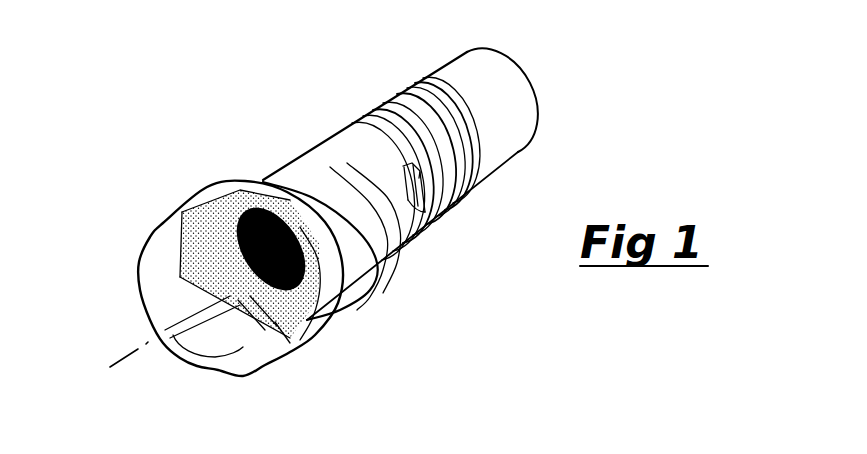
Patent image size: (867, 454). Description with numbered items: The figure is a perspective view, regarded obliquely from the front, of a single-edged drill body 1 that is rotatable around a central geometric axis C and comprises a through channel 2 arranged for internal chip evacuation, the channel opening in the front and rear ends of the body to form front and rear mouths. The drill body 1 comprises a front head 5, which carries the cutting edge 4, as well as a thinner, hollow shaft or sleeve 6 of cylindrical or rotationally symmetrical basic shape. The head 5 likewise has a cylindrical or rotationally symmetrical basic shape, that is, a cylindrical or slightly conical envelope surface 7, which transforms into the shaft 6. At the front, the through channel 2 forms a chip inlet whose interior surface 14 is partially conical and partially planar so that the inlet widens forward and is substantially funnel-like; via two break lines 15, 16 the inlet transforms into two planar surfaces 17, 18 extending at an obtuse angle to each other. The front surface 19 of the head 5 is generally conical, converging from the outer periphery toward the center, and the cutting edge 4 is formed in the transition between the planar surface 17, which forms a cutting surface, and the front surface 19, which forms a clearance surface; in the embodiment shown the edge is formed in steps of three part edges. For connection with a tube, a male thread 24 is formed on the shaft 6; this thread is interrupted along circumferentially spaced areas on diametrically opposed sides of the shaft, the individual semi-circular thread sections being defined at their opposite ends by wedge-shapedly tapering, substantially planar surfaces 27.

The drill body 1 is at (291, 132).
The through channel 2 is at (237, 185).
The cutting edge 4 is at (225, 335).
The front head 5 is at (178, 193).
The shaft 6 is at (430, 68).
The envelope surface 7 is at (320, 276).
The interior surface 14 is at (290, 337).
The break line 15 is at (235, 300).
The break line 16 is at (182, 231).
The planar surface 17 is at (227, 327).
The planar surface 18 is at (183, 247).
The front surface 19 is at (157, 297).
The male thread 24 is at (380, 102).
The planar surface 27 is at (447, 213).
The central geometric axis C is at (562, 56).